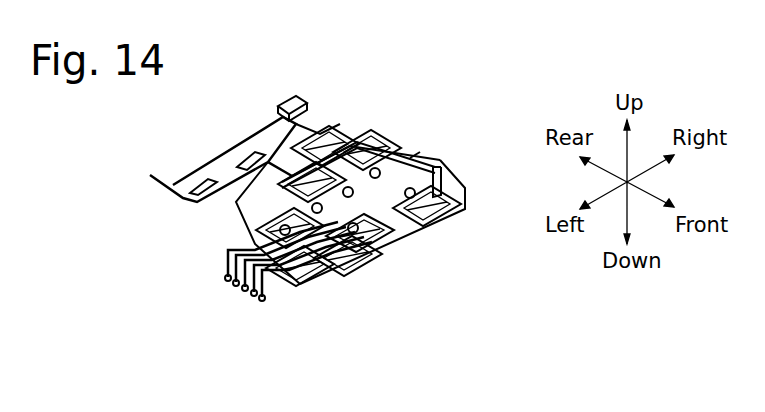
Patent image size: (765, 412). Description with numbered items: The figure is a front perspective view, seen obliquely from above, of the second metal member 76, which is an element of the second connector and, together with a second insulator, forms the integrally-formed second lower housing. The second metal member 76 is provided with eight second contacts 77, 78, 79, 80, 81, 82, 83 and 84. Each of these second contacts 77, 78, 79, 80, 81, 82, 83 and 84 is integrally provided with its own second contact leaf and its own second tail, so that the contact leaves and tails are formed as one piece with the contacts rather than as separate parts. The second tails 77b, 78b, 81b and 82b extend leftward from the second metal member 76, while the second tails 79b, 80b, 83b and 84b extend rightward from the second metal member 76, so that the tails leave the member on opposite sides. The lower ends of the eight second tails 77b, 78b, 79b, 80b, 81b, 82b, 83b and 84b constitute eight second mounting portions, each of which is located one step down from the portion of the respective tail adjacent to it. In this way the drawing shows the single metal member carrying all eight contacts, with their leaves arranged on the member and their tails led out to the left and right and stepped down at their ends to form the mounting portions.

The second metal member 76 is at (377, 106).
The second contact 77 is at (365, 280).
The second tail 77b is at (262, 300).
The second contact 78 is at (365, 265).
The second tail 78b is at (257, 297).
The second contact 79 is at (400, 246).
The second tail 79b is at (420, 160).
The second contact 80 is at (444, 222).
The second tail 80b is at (443, 190).
The second contact 81 is at (300, 198).
The second tail 81b is at (240, 283).
The second contact 82 is at (282, 228).
The second tail 82b is at (250, 290).
The second contact 83 is at (365, 150).
The second tail 83b is at (443, 163).
The second contact 84 is at (380, 150).
The second tail 84b is at (415, 160).